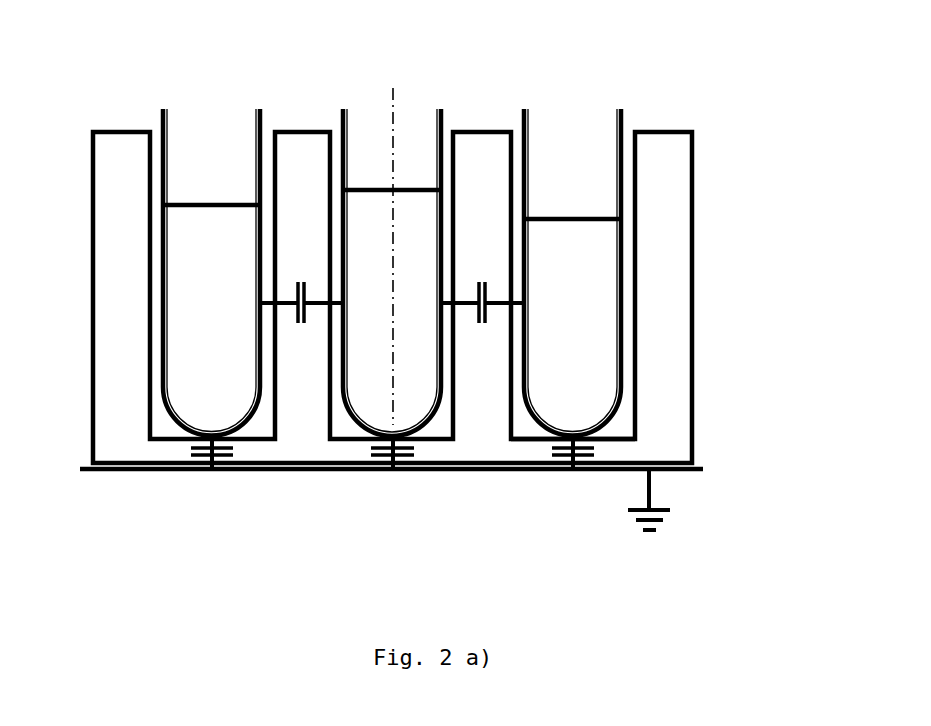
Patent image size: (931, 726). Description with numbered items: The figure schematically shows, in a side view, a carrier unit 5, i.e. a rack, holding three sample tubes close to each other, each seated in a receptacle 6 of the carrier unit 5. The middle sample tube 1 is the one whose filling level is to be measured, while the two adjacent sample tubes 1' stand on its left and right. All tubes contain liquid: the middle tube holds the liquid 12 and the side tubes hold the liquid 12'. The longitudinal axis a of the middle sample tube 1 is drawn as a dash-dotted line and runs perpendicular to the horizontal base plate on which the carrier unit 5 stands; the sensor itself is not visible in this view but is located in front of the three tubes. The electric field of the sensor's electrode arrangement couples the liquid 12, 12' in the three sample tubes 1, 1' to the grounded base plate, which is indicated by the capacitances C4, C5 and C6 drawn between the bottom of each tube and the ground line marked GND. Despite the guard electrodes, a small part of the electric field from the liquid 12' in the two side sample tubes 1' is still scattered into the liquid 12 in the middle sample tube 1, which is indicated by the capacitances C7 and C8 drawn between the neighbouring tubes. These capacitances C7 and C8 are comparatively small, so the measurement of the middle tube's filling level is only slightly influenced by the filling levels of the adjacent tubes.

The sample tube 1 is at (420, 253).
The adjacent sample tube 1' is at (424, 252).
The liquid 12 is at (391, 129).
The liquid 12' is at (392, 143).
The carrier unit 5 is at (702, 183).
The receptacle 6 is at (624, 418).
The longitudinal axis of a sample tube a is at (391, 243).
The partial capacitance C4 is at (408, 452).
The partial capacitance C5 is at (227, 452).
The partial capacitance C6 is at (588, 452).
The partial capacitance C7 is at (301, 319).
The partial capacitance C8 is at (482, 319).
The ground potential GND is at (648, 519).